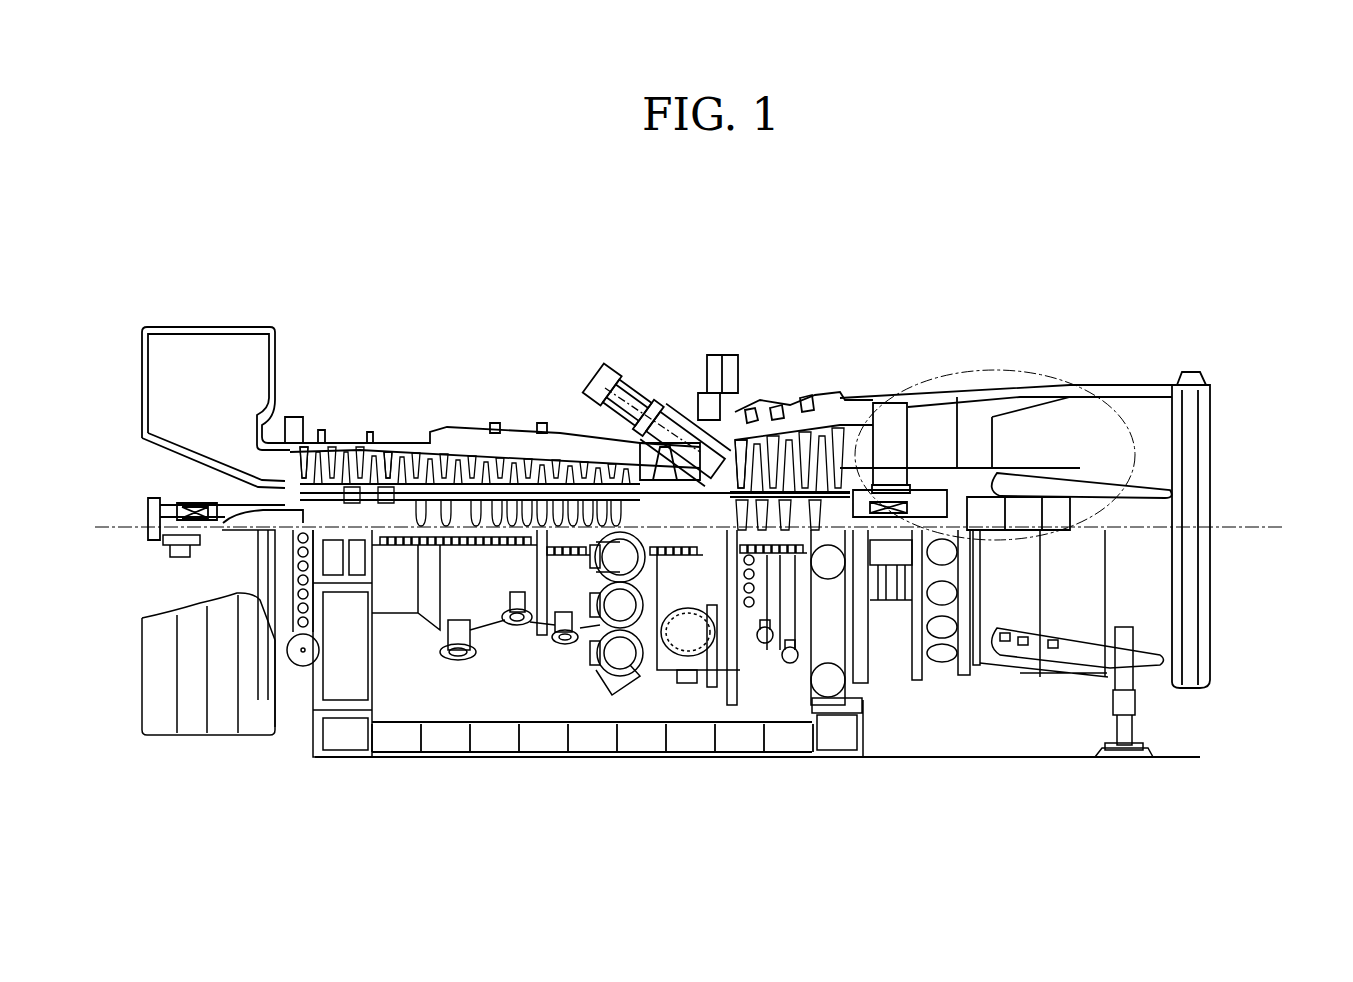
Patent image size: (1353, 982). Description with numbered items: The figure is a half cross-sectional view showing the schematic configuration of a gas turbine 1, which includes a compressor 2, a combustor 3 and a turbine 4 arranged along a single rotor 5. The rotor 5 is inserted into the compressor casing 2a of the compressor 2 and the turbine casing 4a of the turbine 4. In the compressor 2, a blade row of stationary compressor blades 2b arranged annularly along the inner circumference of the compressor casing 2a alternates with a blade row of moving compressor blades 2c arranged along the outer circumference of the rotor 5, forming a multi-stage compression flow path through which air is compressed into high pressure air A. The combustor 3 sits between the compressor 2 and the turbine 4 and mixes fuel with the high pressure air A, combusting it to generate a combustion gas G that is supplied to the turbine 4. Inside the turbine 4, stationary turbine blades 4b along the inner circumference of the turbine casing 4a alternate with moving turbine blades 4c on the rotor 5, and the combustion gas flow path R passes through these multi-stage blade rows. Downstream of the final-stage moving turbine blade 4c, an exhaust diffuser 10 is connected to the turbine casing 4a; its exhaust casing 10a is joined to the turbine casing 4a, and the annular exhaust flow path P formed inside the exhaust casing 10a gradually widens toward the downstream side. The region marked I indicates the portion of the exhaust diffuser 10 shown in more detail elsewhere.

The gas turbine 1 is at (1270, 527).
The compressor 2 is at (492, 430).
The compressor casing 2a is at (347, 442).
The stationary compressor blades 2b is at (443, 460).
The moving compressor blades 2c is at (418, 458).
The combustor 3 is at (627, 362).
The turbine 4 is at (786, 397).
The turbine casing 4a is at (842, 385).
The stationary turbine blades 4b is at (745, 460).
The moving turbine blades 4c is at (737, 447).
The rotor 5 is at (316, 470).
The exhaust diffuser 10 is at (1006, 400).
The exhaust casing 10a is at (950, 375).
The high pressure air A is at (286, 465).
The combustion gas G is at (717, 458).
The combustion gas flow path R is at (772, 440).
The exhaust flow path P is at (913, 403).
The exhaust diffuser inner region I is at (997, 370).